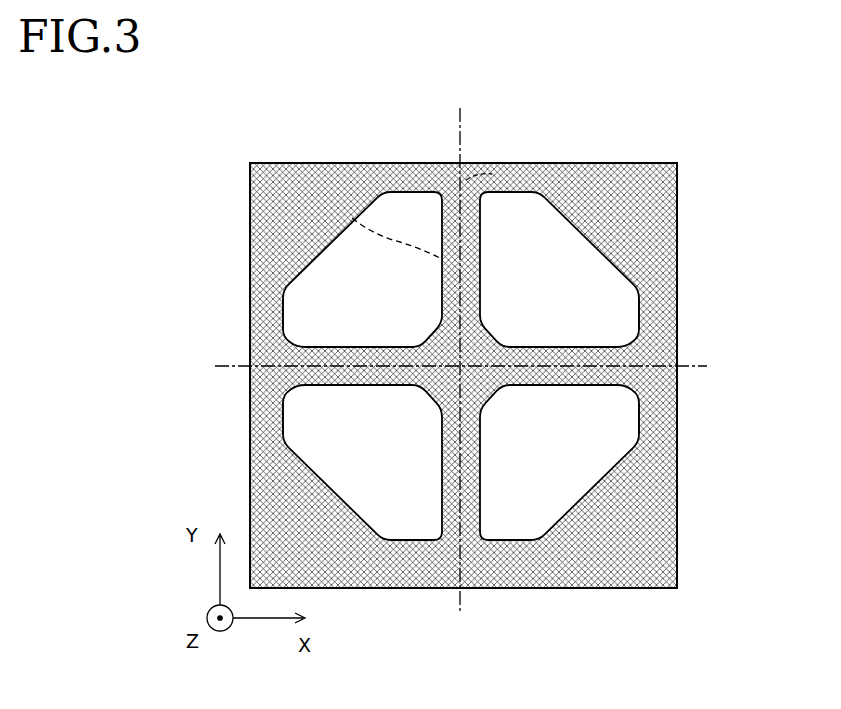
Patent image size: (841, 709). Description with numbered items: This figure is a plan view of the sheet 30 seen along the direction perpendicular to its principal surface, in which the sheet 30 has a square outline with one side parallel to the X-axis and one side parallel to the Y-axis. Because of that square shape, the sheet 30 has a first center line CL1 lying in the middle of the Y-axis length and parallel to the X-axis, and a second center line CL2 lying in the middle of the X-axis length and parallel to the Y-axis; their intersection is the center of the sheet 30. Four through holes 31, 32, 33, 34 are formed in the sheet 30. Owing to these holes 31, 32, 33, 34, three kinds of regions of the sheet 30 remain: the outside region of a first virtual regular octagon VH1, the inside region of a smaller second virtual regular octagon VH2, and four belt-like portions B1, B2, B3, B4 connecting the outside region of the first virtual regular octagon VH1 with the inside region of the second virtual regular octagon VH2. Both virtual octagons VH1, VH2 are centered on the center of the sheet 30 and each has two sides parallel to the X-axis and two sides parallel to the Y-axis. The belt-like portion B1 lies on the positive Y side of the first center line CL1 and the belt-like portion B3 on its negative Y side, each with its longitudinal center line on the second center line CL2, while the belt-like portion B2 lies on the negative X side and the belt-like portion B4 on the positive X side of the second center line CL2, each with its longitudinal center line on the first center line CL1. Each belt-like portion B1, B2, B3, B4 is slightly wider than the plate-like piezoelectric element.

The sheet 30 is at (678, 212).
The hole 31 is at (628, 307).
The hole 32 is at (294, 310).
The hole 33 is at (294, 426).
The hole 34 is at (628, 428).
The belt-like portion B1 is at (483, 273).
The belt-like portion B2 is at (341, 346).
The belt-like portion B3 is at (439, 476).
The belt-like portion B4 is at (539, 387).
The first center line CL1 is at (483, 364).
The second center line CL2 is at (458, 348).
The first virtual regular octagon VH1 is at (478, 176).
The second virtual regular octagon VH2 is at (352, 216).